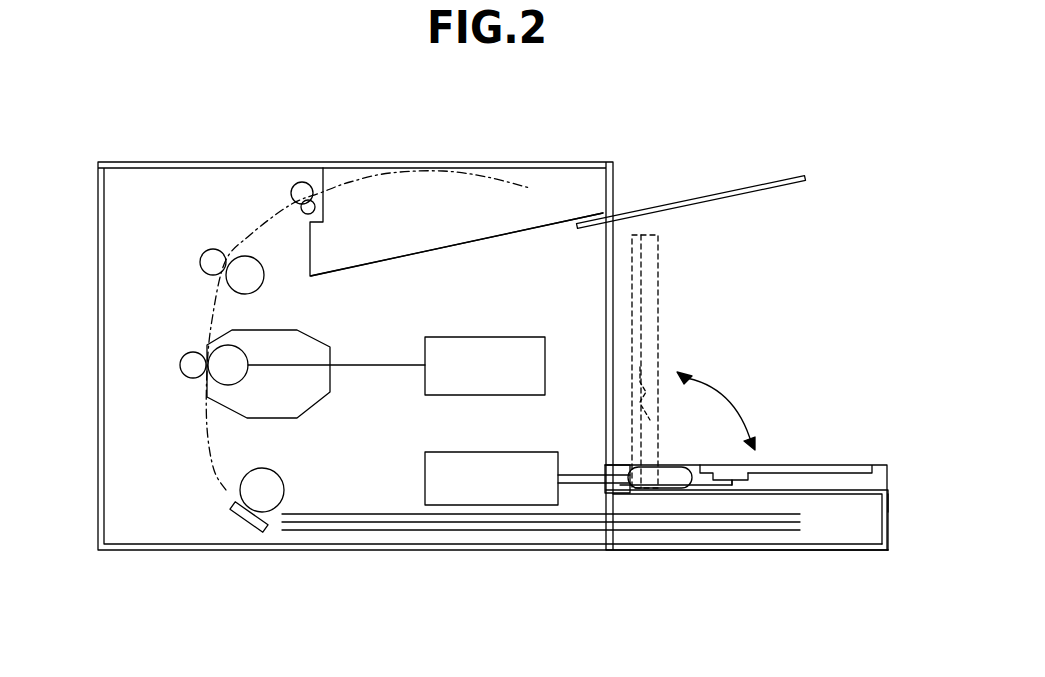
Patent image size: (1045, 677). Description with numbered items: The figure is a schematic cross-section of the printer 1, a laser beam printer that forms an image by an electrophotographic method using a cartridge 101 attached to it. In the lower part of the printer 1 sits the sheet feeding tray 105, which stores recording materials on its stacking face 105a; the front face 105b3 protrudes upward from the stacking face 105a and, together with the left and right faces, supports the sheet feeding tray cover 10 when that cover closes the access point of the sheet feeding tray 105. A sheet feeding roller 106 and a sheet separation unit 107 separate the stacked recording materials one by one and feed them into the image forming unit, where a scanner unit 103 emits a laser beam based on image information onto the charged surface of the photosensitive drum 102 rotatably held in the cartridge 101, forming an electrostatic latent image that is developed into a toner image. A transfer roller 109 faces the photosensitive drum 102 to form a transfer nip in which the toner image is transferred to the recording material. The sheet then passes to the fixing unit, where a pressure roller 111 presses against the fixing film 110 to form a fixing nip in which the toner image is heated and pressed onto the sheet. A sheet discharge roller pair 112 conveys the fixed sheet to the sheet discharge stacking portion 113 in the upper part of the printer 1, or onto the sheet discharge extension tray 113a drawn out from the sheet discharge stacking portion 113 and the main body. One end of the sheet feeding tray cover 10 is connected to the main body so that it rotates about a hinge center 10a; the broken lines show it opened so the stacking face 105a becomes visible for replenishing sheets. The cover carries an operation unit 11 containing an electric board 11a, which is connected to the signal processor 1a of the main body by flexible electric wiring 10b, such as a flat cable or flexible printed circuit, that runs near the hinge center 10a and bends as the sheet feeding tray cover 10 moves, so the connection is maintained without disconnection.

The printer 1 is at (672, 142).
The signal processor 1a is at (505, 487).
The cartridge 101 is at (247, 400).
The photosensitive drum 102 is at (228, 372).
The scanner unit 103 is at (487, 337).
The sheet feeding tray 105 is at (807, 530).
The stacking face 105a is at (862, 553).
The front face 105b3 is at (888, 512).
The sheet feeding roller 106 is at (248, 485).
The sheet separation unit 107 is at (247, 515).
The transfer roller 109 is at (190, 365).
The fixing film 110 is at (247, 280).
The pressure roller 111 is at (215, 258).
The sheet discharge roller pair 112 is at (298, 192).
The sheet discharge stacking portion 113 is at (425, 232).
The sheet discharge extension tray 113a is at (772, 183).
The sheet feeding tray cover 10 is at (827, 465).
The hinge center 10a is at (648, 480).
The electric wiring 10b is at (652, 438).
The operation unit 11 is at (637, 282).
The electric board 11a is at (640, 367).